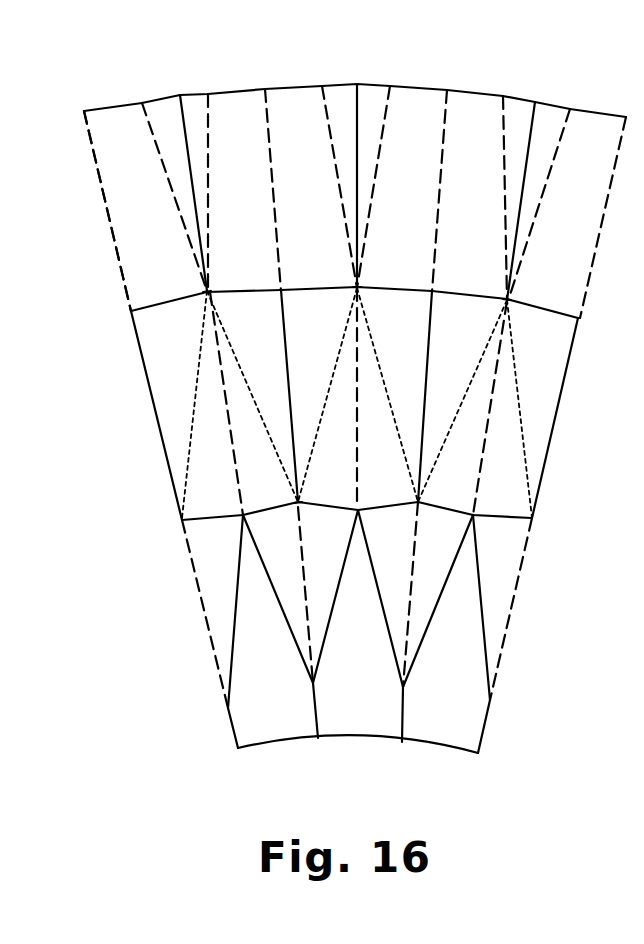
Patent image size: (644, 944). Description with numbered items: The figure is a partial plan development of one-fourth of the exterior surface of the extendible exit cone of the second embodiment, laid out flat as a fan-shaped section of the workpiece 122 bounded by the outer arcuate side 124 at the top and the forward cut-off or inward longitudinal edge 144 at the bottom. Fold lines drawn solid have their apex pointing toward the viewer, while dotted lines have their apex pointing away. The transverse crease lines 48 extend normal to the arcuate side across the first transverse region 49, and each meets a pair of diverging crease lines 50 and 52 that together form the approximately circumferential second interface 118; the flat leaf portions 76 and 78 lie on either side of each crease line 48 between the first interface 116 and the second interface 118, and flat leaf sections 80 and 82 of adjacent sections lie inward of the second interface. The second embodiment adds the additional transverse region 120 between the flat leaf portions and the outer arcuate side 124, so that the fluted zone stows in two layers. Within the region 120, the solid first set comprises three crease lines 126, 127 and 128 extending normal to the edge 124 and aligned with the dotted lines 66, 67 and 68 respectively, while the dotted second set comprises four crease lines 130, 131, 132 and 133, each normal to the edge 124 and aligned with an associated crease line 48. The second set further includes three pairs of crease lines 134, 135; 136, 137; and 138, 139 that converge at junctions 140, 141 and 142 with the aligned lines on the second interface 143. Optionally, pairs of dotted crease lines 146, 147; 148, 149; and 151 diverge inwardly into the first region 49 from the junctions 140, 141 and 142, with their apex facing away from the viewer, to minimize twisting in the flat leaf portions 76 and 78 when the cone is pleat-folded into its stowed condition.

The crease line 48 is at (160, 432).
The first transverse region 49 is at (153, 367).
The crease line 50 is at (272, 510).
The crease line 52 is at (337, 510).
The dotted crease line 66 is at (228, 428).
The dotted crease line 67 is at (358, 417).
The dotted crease line 68 is at (488, 423).
The flat leaf portion 76 is at (252, 328).
The flat leaf portion 78 is at (307, 328).
The flat leaf section 80 is at (333, 578).
The flat leaf section 82 is at (393, 608).
The first interface 116 is at (301, 288).
The second interface 118 is at (318, 502).
The additional transverse region 120 is at (116, 208).
The workpiece 122 is at (575, 343).
The outer arcuate side 124 is at (292, 82).
The solid crease line 126 is at (180, 99).
The solid crease line 127 is at (360, 90).
The solid crease line 128 is at (537, 107).
The second-set crease line 130 is at (117, 252).
The second-set crease line 131 is at (275, 230).
The second-set crease line 132 is at (438, 158).
The second-set crease line 133 is at (590, 257).
The converging crease line 134 is at (172, 193).
The converging crease line 135 is at (212, 152).
The converging crease line 136 is at (333, 187).
The converging crease line 137 is at (383, 142).
The converging crease line 138 is at (502, 197).
The converging crease line 139 is at (550, 177).
The junction 140 is at (210, 289).
The junction 141 is at (360, 286).
The junction 142 is at (511, 299).
The second interface 143 is at (155, 305).
The inward longitudinal edge 144 is at (342, 742).
The diverging crease line 146 is at (198, 370).
The diverging crease line 147 is at (255, 398).
The diverging crease line 148 is at (322, 407).
The diverging crease line 149 is at (380, 360).
The diverging crease line 151 is at (515, 380).